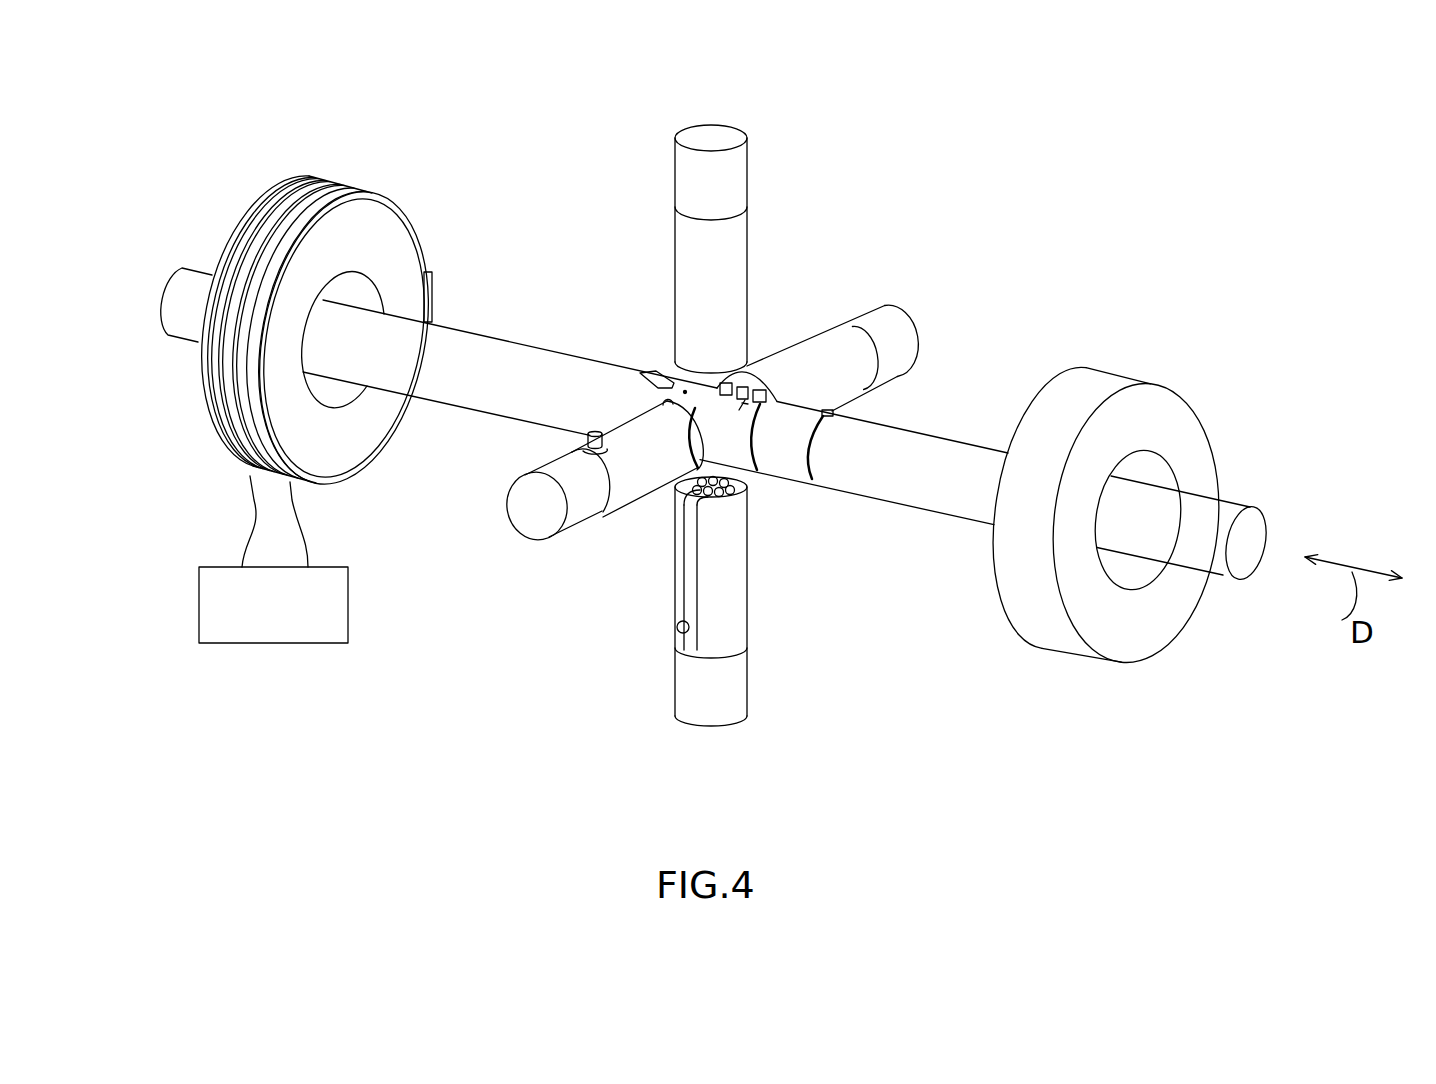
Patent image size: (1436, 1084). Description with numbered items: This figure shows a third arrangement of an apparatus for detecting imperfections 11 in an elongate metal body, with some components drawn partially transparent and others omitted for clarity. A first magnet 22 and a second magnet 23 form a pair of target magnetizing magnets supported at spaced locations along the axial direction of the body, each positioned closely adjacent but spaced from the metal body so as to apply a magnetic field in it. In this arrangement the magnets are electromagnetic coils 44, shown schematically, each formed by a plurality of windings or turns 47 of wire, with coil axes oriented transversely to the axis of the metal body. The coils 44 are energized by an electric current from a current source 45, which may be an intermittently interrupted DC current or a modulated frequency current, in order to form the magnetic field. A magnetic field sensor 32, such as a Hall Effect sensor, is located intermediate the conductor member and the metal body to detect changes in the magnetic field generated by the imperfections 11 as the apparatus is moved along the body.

The imperfections 11 is at (813, 453).
The first magnet 22 is at (374, 162).
The second magnet 23 is at (1150, 370).
The magnetic field sensor 32 is at (760, 491).
The electromagnetic coils 44 is at (413, 233).
The current source 45 is at (350, 594).
The windings or turns 47 is at (268, 205).